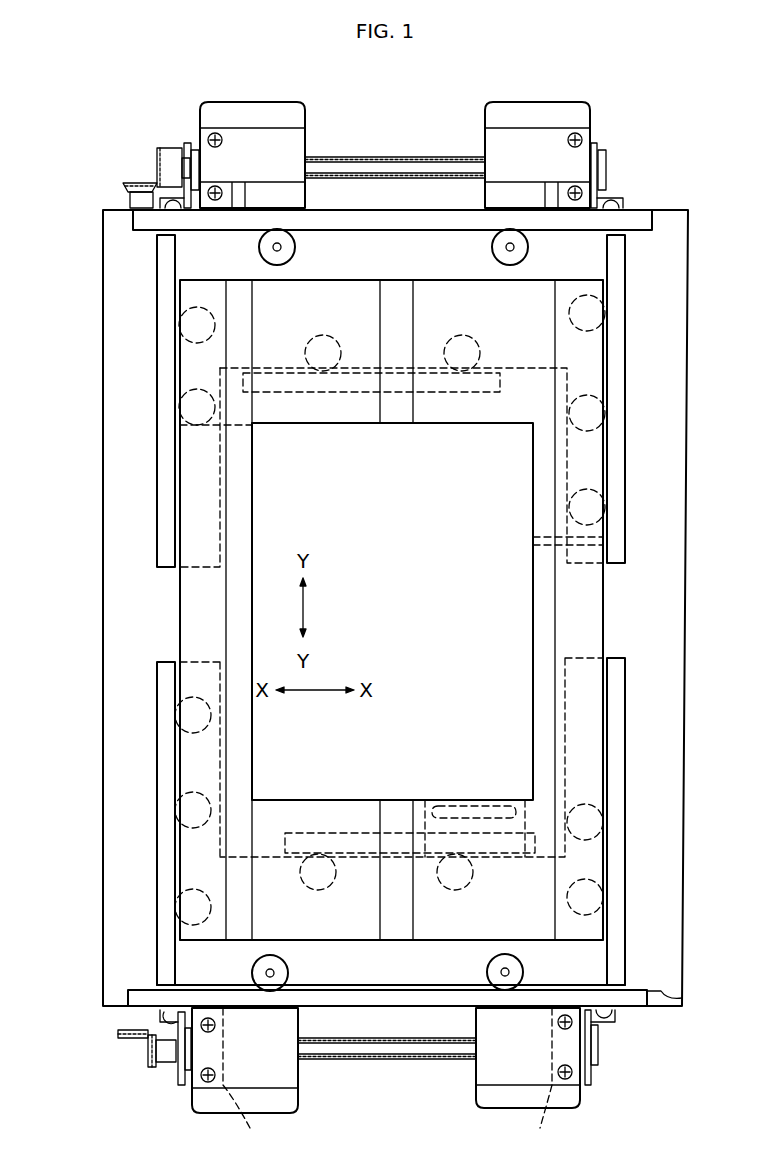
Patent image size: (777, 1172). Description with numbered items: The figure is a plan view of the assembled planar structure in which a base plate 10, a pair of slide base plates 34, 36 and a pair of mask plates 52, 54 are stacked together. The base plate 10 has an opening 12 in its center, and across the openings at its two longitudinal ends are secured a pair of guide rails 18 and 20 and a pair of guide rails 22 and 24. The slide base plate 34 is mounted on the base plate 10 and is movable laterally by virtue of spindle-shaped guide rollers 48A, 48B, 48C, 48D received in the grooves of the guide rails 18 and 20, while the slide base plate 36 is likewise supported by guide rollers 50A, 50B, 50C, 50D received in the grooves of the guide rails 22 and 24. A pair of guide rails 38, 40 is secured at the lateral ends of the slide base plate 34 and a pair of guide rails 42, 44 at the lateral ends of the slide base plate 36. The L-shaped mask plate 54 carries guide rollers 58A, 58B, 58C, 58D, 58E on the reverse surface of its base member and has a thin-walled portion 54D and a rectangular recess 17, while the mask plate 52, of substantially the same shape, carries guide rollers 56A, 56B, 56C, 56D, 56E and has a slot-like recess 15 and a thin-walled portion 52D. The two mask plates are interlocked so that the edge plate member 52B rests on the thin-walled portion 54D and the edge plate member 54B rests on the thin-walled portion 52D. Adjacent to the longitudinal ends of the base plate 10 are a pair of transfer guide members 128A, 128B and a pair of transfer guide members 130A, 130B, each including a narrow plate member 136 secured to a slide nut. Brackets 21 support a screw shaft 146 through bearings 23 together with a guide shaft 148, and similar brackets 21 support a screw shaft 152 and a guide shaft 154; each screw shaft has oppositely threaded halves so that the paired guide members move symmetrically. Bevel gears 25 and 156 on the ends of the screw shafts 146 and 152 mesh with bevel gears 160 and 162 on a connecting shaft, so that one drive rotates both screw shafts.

The base plate 10 is at (103, 856).
The opening 12 is at (392, 611).
The slot-like recess 15 is at (481, 806).
The recess 17 is at (540, 547).
The guide rail 18 is at (683, 997).
The guide rail 20 is at (345, 833).
The bracket 21 is at (195, 155).
The guide rail 22 is at (297, 393).
The bearing 23 is at (187, 150).
The guide rail 24 is at (635, 225).
The bevel gear 25 is at (148, 1055).
The slide base plate 34 is at (375, 992).
The slide base plate 36 is at (386, 242).
The guide rail 38 is at (618, 858).
The guide rail 40 is at (160, 748).
The guide rail 42 is at (620, 468).
The guide rail 44 is at (162, 496).
The guide roller 48A is at (524, 970).
The guide roller 48B is at (252, 972).
The guide roller 48C is at (452, 858).
The guide roller 48D is at (315, 858).
The guide roller 50A is at (478, 347).
The guide roller 50B is at (322, 335).
The guide roller 50C is at (530, 250).
The guide roller 50D is at (258, 250).
The mask plate 52 is at (307, 923).
The edge plate member 52B is at (190, 626).
The thin-walled portion 52D is at (525, 805).
The mask plate 54 is at (555, 287).
The edge plate member 54B is at (592, 636).
The thin-walled portion 54D is at (385, 424).
The guide roller 56A is at (180, 905).
The guide roller 56B is at (180, 810).
The guide roller 56C is at (182, 712).
The guide roller 56D is at (604, 897).
The guide roller 56E is at (602, 818).
The guide roller 58A is at (604, 507).
The guide roller 58B is at (604, 413).
The guide roller 58C is at (600, 315).
The guide roller 58D is at (181, 408).
The guide roller 58E is at (181, 322).
The transfer guide member 128A is at (191, 1086).
The transfer guide member 128B is at (582, 1093).
The transfer guide member 130A is at (545, 100).
The transfer guide member 130B is at (205, 103).
The plate member 136 is at (391, 1081).
The screw shaft 146 is at (338, 1060).
The guide shaft 148 is at (430, 1060).
The screw shaft 152 is at (375, 156).
The guide shaft 154 is at (434, 172).
The bevel gear 156 is at (160, 165).
The bevel gear 160 is at (118, 1033).
The bevel gear 162 is at (125, 186).